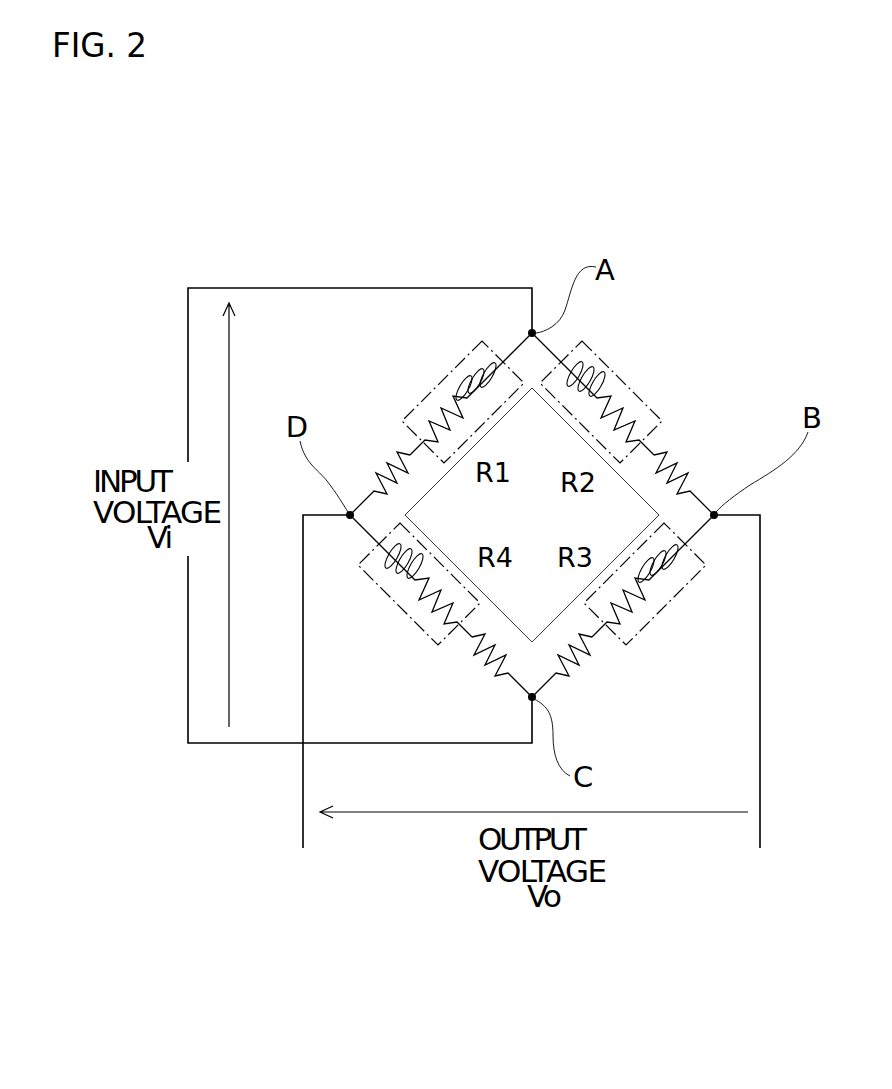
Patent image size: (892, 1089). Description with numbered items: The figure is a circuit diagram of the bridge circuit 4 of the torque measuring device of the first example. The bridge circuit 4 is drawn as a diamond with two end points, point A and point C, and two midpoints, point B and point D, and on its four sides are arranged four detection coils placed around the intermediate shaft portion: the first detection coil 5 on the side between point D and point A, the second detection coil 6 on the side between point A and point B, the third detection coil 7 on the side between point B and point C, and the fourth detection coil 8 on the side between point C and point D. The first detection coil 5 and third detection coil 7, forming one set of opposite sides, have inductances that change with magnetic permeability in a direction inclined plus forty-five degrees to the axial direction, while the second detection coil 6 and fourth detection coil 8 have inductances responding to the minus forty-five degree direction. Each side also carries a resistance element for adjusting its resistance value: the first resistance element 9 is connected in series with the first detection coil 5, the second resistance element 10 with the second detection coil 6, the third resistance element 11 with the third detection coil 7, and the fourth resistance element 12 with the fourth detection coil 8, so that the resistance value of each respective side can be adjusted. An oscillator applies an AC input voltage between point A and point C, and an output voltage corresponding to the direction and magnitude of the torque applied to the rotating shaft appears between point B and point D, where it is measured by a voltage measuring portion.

The bridge circuit 4 is at (660, 246).
The first detection coil 5 is at (440, 384).
The second detection coil 6 is at (641, 378).
The third detection coil 7 is at (667, 612).
The fourth detection coil 8 is at (393, 607).
The first resistance element 9 is at (385, 465).
The second resistance element 10 is at (683, 454).
The third resistance element 11 is at (593, 668).
The fourth resistance element 12 is at (488, 668).